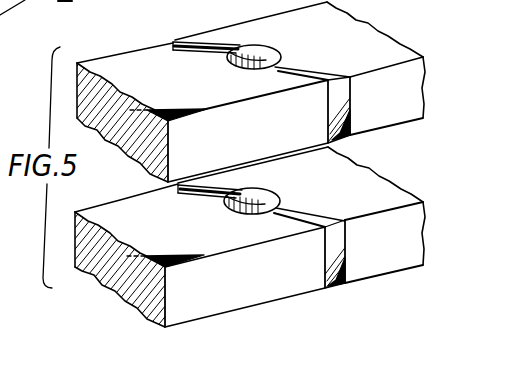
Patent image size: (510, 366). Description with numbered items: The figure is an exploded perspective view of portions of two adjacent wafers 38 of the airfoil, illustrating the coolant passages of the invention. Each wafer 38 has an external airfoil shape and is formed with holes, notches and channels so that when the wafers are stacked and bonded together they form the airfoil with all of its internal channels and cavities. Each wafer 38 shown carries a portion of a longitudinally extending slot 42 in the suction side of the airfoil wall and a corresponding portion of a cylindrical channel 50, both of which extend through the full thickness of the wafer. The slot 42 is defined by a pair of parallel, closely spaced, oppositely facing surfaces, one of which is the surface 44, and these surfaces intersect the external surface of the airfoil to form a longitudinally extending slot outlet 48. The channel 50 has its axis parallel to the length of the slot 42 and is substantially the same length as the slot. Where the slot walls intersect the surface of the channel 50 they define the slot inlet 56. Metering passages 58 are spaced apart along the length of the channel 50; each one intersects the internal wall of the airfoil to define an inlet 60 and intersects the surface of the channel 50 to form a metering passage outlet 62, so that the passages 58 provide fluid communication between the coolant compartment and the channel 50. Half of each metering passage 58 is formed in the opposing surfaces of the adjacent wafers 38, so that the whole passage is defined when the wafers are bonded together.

The wafer 38 is at (263, 138).
The slot 42 is at (307, 72).
The surface 44 is at (341, 86).
The slot outlet 48 is at (348, 100).
The cylindrical channel 50 is at (268, 58).
The slot inlet 56 is at (266, 69).
The metering passage 58 is at (203, 42).
The inlet 60 is at (172, 43).
The metering passage outlet 62 is at (248, 50).